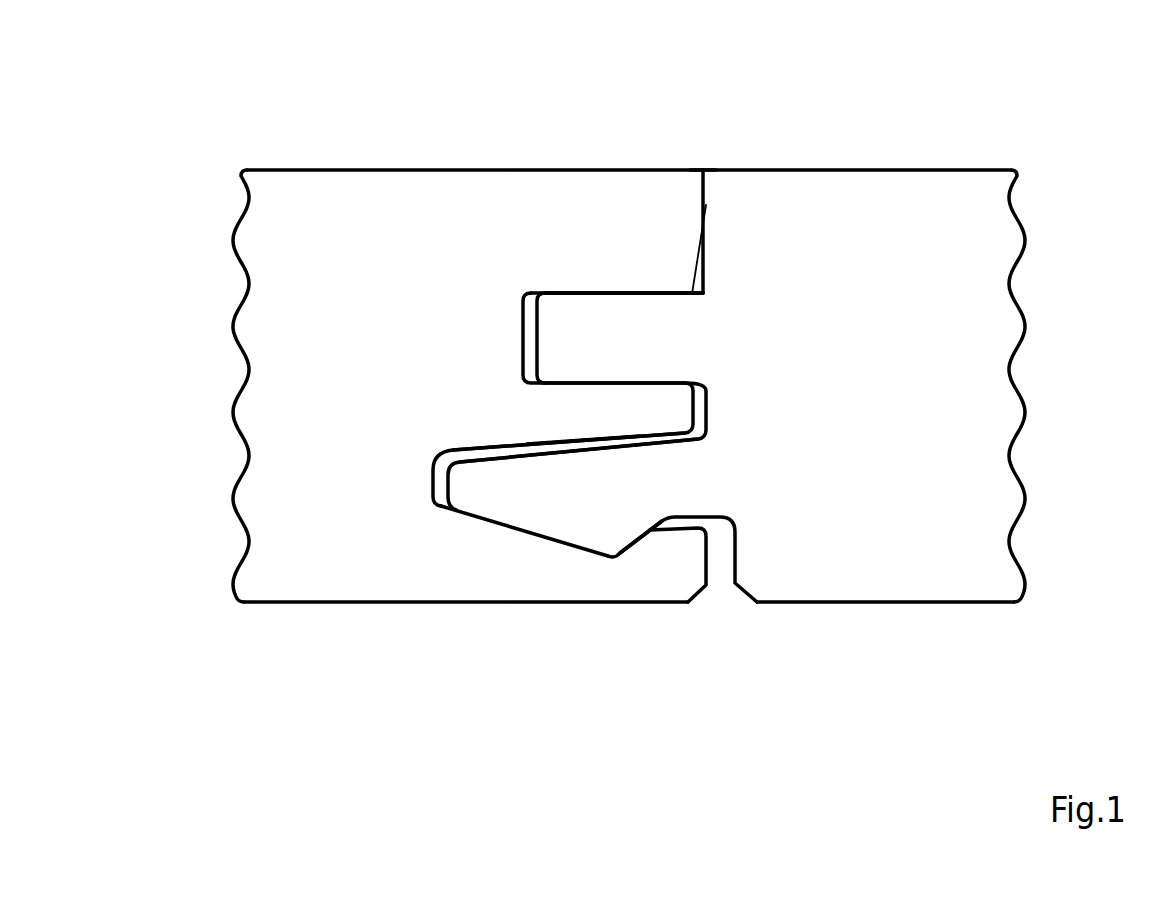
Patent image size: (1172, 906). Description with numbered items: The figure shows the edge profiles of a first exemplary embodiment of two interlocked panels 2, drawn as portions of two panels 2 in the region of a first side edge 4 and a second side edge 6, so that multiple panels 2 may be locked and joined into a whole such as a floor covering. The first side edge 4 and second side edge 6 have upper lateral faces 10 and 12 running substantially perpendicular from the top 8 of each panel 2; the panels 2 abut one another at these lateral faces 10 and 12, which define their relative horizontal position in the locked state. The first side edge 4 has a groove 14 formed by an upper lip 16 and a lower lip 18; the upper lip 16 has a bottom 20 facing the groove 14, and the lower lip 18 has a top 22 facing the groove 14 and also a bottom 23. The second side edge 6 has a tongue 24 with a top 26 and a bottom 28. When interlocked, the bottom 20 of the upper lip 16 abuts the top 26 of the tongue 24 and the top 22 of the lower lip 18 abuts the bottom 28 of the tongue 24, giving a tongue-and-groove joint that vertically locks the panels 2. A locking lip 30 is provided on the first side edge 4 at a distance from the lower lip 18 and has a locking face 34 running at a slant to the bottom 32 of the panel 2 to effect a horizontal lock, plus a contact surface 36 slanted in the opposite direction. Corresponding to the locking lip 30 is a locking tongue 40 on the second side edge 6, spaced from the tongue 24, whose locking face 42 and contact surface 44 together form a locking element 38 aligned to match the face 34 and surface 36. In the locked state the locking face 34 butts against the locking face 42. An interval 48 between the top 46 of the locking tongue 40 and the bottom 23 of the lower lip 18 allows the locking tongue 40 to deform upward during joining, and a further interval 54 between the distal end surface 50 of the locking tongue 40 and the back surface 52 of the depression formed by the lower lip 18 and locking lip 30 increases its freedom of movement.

The panel 2 is at (405, 192).
The first side edge 4 is at (719, 168).
The second side edge 6 is at (705, 150).
The top 8 is at (470, 170).
The upper lateral face 10 is at (707, 207).
The upper lateral face 12 is at (703, 200).
The groove 14 is at (521, 323).
The upper lip 16 is at (600, 232).
The lower lip 18 is at (575, 418).
The bottom of upper lip 20 is at (596, 204).
The top of lower lip 22 is at (412, 381).
The bottom of lower lip 23 is at (527, 444).
The tongue 24 is at (600, 333).
The top of tongue 26 is at (582, 292).
The bottom of tongue 28 is at (585, 400).
The locking lip 30 is at (470, 577).
The bottom 32 is at (325, 603).
The locking face 34 is at (666, 609).
The contact surface 36 is at (524, 601).
The locking element 38 is at (603, 535).
The locking tongue 40 is at (570, 485).
The locking face 42 is at (637, 543).
The contact surface 44 is at (545, 540).
The top of locking tongue 46 is at (600, 452).
The interval 48 is at (337, 529).
The distal end surface 50 is at (435, 500).
The back surface 52 is at (337, 529).
The interval 54 is at (434, 478).